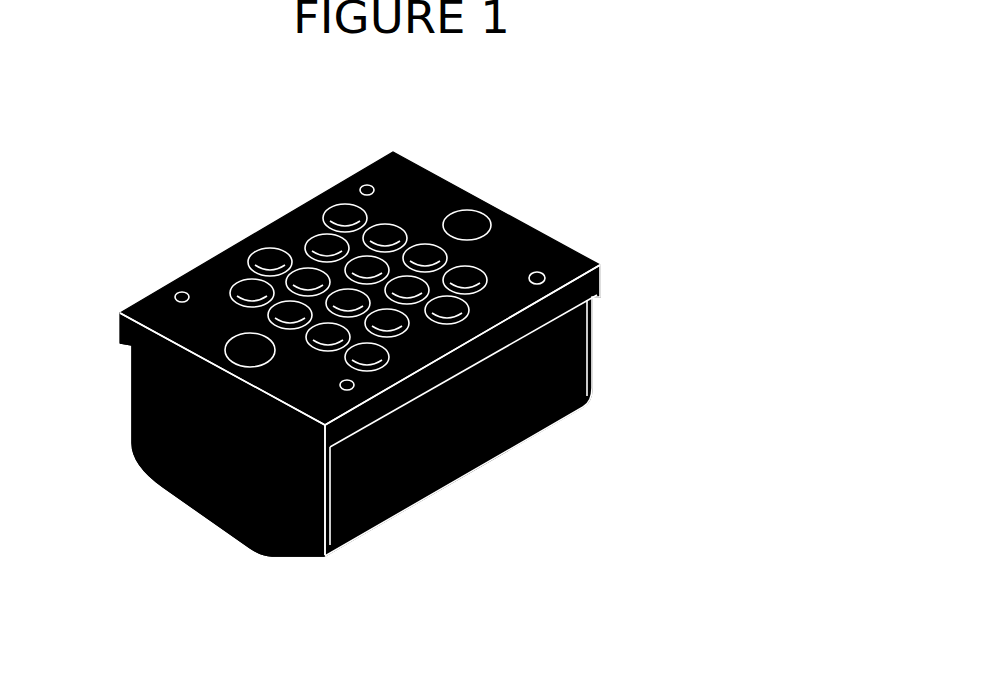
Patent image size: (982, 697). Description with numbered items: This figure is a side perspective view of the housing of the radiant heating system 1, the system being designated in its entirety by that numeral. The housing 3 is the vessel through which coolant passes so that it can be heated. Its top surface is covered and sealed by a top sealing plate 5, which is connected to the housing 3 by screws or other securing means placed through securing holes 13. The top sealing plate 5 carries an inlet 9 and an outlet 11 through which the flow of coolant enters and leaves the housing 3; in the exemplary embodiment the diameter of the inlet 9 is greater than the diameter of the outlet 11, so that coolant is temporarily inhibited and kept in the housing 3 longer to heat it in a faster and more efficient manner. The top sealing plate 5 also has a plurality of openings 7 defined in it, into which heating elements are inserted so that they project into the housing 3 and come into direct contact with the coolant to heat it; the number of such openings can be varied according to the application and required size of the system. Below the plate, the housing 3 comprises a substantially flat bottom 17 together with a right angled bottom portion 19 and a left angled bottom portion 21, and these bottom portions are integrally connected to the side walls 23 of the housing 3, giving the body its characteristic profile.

The radiant heating system 1 is at (762, 143).
The housing 3 is at (563, 362).
The top sealing plate 5 is at (207, 310).
The openings 7 is at (393, 337).
The inlet 9 is at (262, 362).
The outlet 11 is at (490, 220).
The securing holes 13 is at (545, 278).
The substantially flat bottom 17 is at (223, 535).
The right angled bottom portion 19 is at (292, 557).
The left angled bottom portion 21 is at (158, 480).
The side walls 23 is at (157, 408).